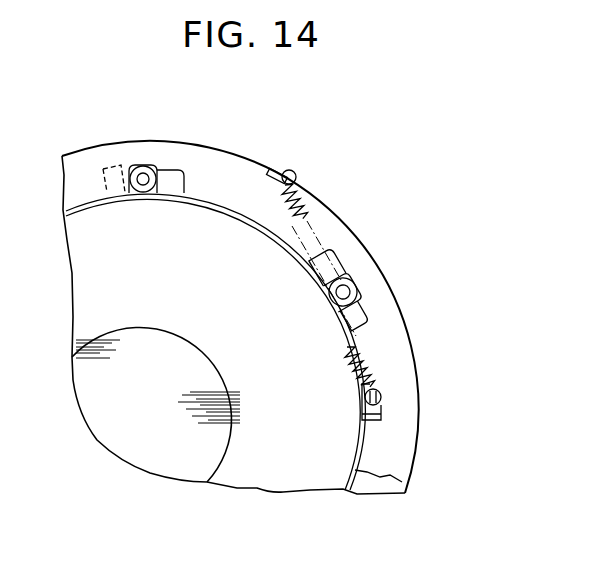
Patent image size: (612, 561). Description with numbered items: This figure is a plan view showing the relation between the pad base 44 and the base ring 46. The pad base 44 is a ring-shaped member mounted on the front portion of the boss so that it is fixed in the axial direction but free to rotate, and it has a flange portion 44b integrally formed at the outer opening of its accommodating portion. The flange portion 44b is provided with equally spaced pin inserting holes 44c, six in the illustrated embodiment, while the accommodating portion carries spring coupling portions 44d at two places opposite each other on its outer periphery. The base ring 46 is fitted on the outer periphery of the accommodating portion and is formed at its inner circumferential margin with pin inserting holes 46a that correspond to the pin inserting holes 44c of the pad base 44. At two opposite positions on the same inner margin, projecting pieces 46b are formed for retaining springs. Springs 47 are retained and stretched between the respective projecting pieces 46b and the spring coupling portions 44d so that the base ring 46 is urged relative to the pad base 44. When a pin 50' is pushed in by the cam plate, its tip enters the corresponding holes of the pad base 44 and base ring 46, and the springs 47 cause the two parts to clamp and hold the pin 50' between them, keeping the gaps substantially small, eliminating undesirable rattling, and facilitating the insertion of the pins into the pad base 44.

The pad base 44 is at (280, 440).
The flange portion 44b is at (400, 483).
The pin inserting holes 44c is at (114, 165).
The spring coupling portions 44d is at (380, 388).
The base ring 46 is at (387, 438).
The pin inserting holes 46a is at (168, 178).
The projecting pieces 46b is at (293, 169).
The springs 47 is at (306, 213).
The pin 50' is at (246, 194).